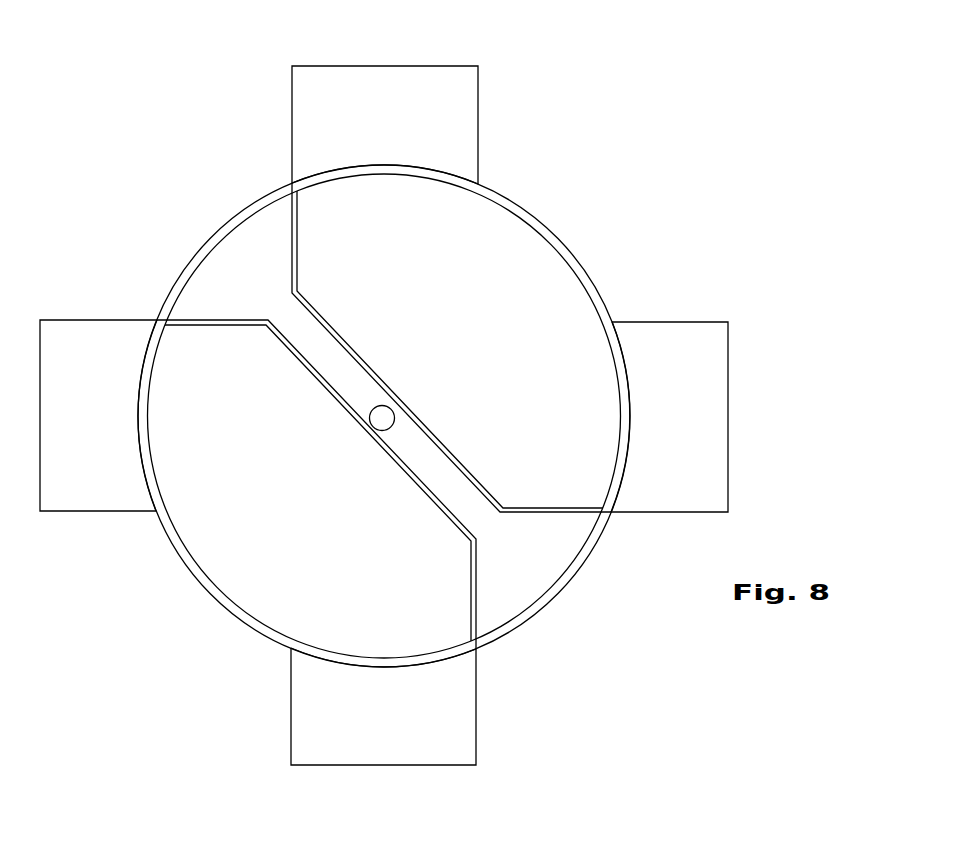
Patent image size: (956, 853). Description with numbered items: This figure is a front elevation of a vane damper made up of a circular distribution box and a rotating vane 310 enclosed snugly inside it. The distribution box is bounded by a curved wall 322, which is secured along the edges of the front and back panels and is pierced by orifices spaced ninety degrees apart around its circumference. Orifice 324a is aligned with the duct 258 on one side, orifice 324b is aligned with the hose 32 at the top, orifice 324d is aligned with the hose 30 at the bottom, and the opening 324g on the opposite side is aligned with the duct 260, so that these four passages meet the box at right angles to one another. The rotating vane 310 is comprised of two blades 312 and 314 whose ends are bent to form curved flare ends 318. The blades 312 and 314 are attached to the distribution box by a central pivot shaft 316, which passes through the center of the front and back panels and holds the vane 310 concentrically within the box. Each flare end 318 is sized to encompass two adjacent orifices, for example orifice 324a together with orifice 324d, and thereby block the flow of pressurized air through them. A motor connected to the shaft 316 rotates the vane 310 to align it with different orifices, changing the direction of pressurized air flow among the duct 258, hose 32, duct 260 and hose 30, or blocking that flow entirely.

The hose 30 is at (290, 672).
The hose 32 is at (437, 66).
The duct 258 is at (116, 511).
The duct 260 is at (637, 513).
The rotating vane 310 is at (441, 321).
The blade 312 is at (486, 486).
The blade 314 is at (222, 327).
The central pivot shaft 316 is at (382, 418).
The curved flare end 318 is at (272, 207).
The curved wall 322 is at (540, 230).
The orifice 324a is at (152, 511).
The orifice 324b is at (470, 188).
The orifice 324d is at (385, 665).
The right opening 324g is at (623, 375).